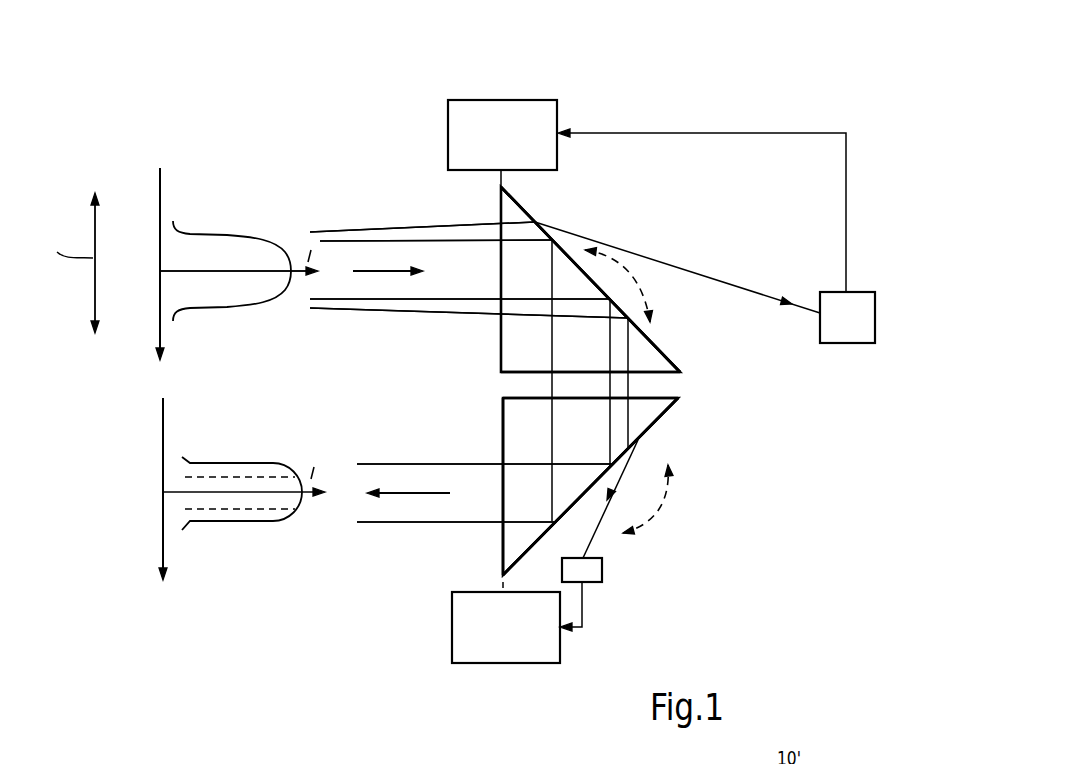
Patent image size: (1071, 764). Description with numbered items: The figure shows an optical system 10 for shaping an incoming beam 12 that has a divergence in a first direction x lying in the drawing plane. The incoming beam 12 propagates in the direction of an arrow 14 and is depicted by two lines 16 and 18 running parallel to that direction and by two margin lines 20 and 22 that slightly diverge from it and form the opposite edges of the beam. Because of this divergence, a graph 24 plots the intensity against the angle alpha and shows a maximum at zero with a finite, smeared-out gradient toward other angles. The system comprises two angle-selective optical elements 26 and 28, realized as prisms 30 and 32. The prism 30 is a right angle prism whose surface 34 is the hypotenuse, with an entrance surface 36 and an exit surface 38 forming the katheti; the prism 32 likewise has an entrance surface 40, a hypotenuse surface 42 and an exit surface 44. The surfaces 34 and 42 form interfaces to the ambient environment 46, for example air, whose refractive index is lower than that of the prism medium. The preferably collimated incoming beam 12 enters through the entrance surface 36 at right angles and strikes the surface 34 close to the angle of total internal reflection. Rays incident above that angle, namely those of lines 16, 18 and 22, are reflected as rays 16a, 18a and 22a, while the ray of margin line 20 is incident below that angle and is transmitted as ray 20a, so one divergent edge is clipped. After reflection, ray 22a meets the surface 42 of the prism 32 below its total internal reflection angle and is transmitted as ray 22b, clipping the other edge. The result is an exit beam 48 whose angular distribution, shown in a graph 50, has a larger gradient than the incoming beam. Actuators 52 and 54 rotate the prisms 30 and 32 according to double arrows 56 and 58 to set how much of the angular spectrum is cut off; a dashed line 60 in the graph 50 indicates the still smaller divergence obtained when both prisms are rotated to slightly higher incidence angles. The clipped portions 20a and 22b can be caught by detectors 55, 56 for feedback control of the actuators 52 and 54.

The optical system 10 is at (667, 117).
The incoming beam 12 is at (393, 213).
The arrow 14 is at (375, 272).
The line 16 is at (443, 240).
The reflected ray 16a is at (552, 258).
The line 18 is at (437, 303).
The reflected ray 18a is at (610, 327).
The margin line 20 is at (333, 231).
The transmitted ray 20a is at (650, 257).
The margin line 22 is at (325, 308).
The reflected ray 22a is at (629, 350).
The transmitted ray 22b is at (594, 535).
The graph 24 is at (234, 207).
The angle-selective optical element 26 is at (560, 218).
The angle-selective optical element 28 is at (642, 442).
The prism 30 is at (517, 342).
The prism 32 is at (523, 439).
The surface 34 is at (655, 345).
The entrance surface 36 is at (501, 259).
The exit surface 38 is at (665, 374).
The entrance surface 40 is at (659, 394).
The surface 42 is at (657, 420).
The exit surface 44 is at (503, 542).
The ambient environment 46 is at (772, 263).
The exit beam 48 is at (365, 540).
The graph 50 is at (238, 548).
The actuator 52 is at (497, 122).
The actuator 54 is at (522, 647).
The detector 55 is at (862, 308).
The double arrow 56 is at (633, 276).
The double arrow 58 is at (650, 512).
The dashed line 60 is at (220, 477).